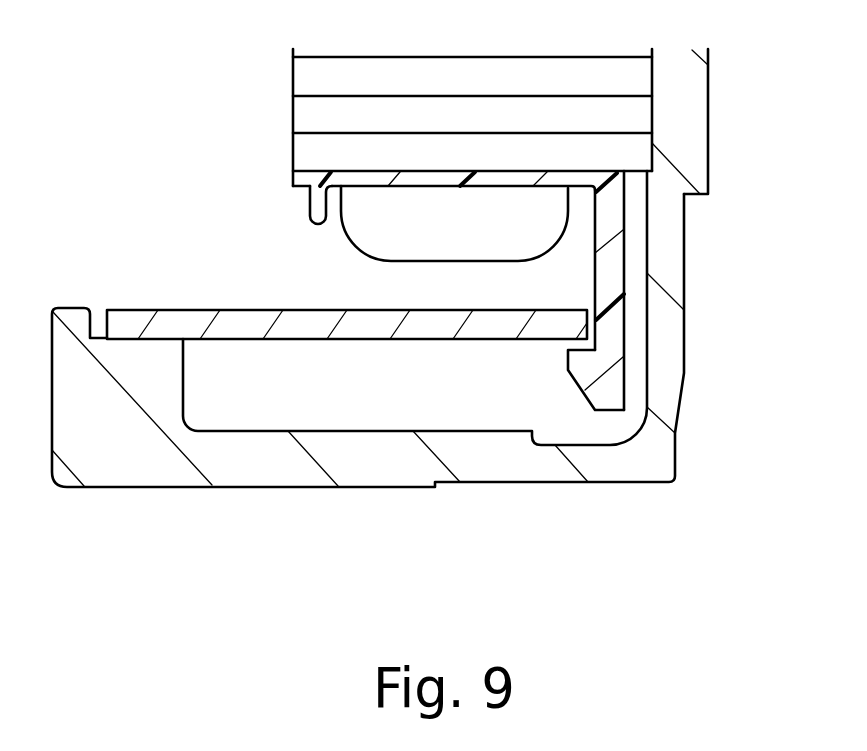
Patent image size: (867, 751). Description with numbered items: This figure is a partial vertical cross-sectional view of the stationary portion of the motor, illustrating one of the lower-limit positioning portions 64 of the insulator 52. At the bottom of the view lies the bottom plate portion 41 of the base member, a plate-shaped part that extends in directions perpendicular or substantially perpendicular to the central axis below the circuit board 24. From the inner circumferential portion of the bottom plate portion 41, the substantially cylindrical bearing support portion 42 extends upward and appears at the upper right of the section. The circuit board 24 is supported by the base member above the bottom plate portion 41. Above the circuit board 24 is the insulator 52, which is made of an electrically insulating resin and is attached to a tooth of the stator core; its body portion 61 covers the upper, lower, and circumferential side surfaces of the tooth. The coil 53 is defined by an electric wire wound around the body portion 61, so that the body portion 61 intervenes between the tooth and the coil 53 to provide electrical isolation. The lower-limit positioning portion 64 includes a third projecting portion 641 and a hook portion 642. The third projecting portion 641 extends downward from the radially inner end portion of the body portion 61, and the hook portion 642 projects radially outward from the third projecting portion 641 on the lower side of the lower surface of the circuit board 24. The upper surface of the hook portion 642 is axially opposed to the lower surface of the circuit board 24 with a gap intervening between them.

The circuit board 24 is at (238, 326).
The bottom plate portion 41 is at (378, 463).
The bearing support portion 42 is at (680, 108).
The insulator 52 is at (296, 195).
The coil 53 is at (387, 242).
The body portion 61 is at (428, 180).
The lower-limit positioning portion 64 is at (690, 290).
The third projecting portion 641 is at (610, 250).
The hook portion 642 is at (583, 370).